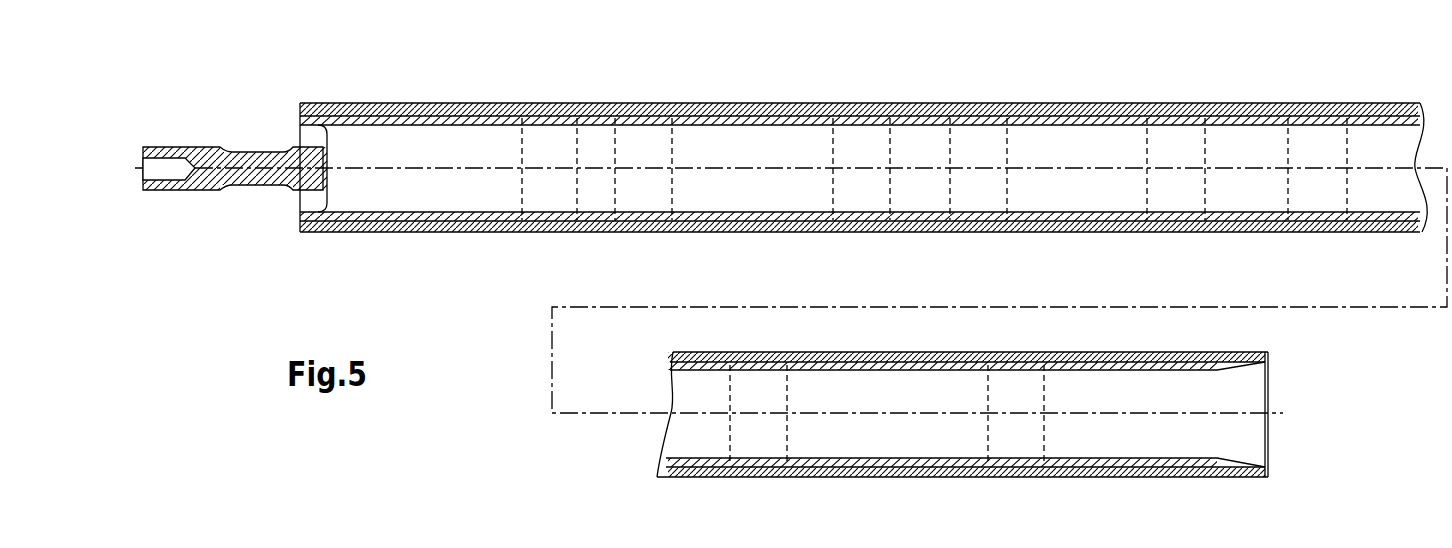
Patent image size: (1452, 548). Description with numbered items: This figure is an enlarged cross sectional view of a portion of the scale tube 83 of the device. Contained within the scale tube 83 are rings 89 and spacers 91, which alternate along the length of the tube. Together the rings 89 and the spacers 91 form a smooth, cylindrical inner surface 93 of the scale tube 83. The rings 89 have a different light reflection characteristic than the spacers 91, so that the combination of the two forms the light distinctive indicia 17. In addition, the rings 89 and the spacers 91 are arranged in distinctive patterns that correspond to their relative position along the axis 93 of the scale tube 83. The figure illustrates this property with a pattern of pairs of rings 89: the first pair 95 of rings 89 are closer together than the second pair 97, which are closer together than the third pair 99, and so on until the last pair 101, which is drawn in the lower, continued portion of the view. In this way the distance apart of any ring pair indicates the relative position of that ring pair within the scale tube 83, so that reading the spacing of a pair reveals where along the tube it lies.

The light distinctive indicia 17 is at (650, 190).
The scale tube 83 is at (830, 117).
The rings 89 is at (548, 145).
The spacers 91 is at (432, 147).
The inner surface 93 is at (757, 145).
The first pair 95 is at (530, 185).
The second pair 97 is at (840, 183).
The third pair 99 is at (1162, 190).
The last pair 101 is at (765, 388).